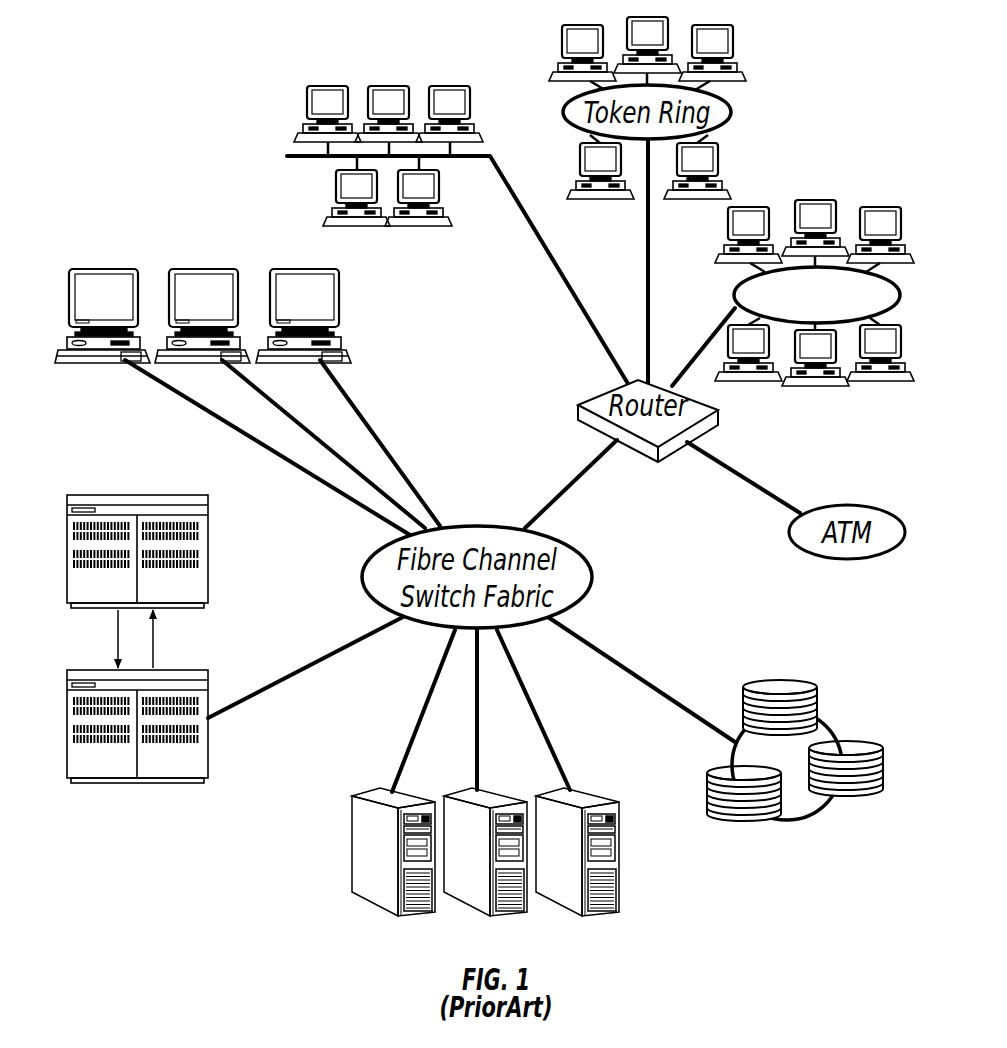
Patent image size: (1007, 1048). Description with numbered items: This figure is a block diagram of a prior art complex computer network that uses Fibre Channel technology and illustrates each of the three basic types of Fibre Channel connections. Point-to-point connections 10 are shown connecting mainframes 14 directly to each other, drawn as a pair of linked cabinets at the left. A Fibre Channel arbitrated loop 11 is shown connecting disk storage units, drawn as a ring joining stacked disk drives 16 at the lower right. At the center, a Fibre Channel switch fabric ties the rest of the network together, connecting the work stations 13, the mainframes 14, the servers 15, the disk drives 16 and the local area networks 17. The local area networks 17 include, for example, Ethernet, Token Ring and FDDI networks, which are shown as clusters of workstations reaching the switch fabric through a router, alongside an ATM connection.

The point-to-point connections 10 is at (192, 639).
The Fibre Channel arbitrated loop 11 is at (777, 733).
The work stations 13 is at (357, 327).
The mainframes 14 is at (208, 750).
The servers 15 is at (638, 902).
The disk drives 16 is at (706, 798).
The local area networks (LANS) 17 is at (822, 190).